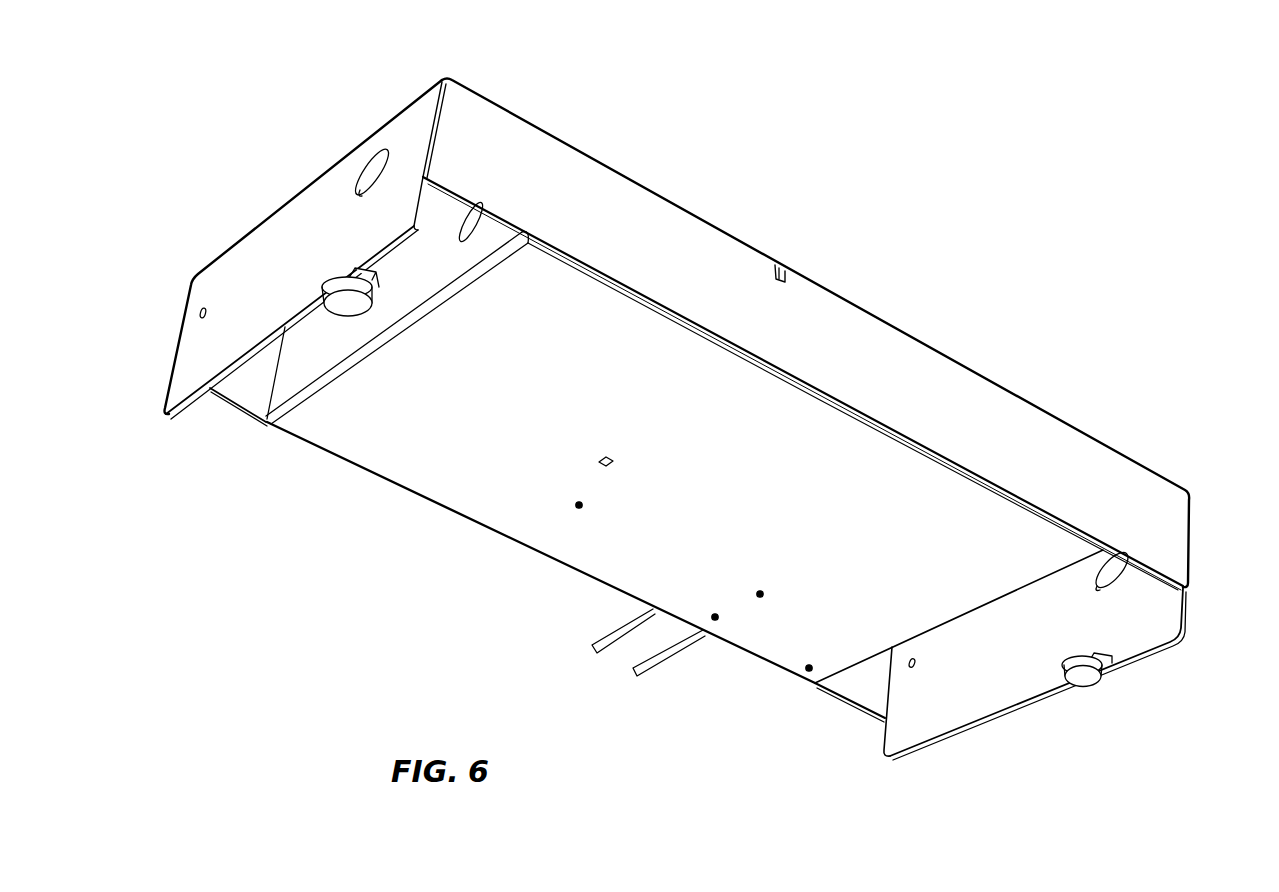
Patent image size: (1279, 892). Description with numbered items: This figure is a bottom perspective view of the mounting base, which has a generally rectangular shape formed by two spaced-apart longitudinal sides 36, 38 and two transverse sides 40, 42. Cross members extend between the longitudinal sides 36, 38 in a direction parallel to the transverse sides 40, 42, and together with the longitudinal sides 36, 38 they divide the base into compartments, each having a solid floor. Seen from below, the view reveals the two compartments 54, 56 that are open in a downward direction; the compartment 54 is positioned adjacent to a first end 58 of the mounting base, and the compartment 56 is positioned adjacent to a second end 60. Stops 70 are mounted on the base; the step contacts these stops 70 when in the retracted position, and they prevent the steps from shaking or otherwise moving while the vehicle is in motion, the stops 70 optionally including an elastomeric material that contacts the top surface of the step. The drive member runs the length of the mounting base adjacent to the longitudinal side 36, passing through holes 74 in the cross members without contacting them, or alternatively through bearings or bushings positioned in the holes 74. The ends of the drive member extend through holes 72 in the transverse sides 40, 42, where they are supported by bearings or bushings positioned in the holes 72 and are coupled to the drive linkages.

The second end 60 is at (307, 111).
The longitudinal side 36 is at (870, 334).
The transverse side 42 is at (283, 213).
The transverse side 40 is at (1018, 683).
The longitudinal side 38 is at (223, 388).
The compartment 56 is at (255, 387).
The compartment 54 is at (861, 683).
The first end 58 is at (1172, 684).
The stop 70 is at (353, 313).
The hole 72 is at (376, 150).
The hole 74 is at (477, 212).